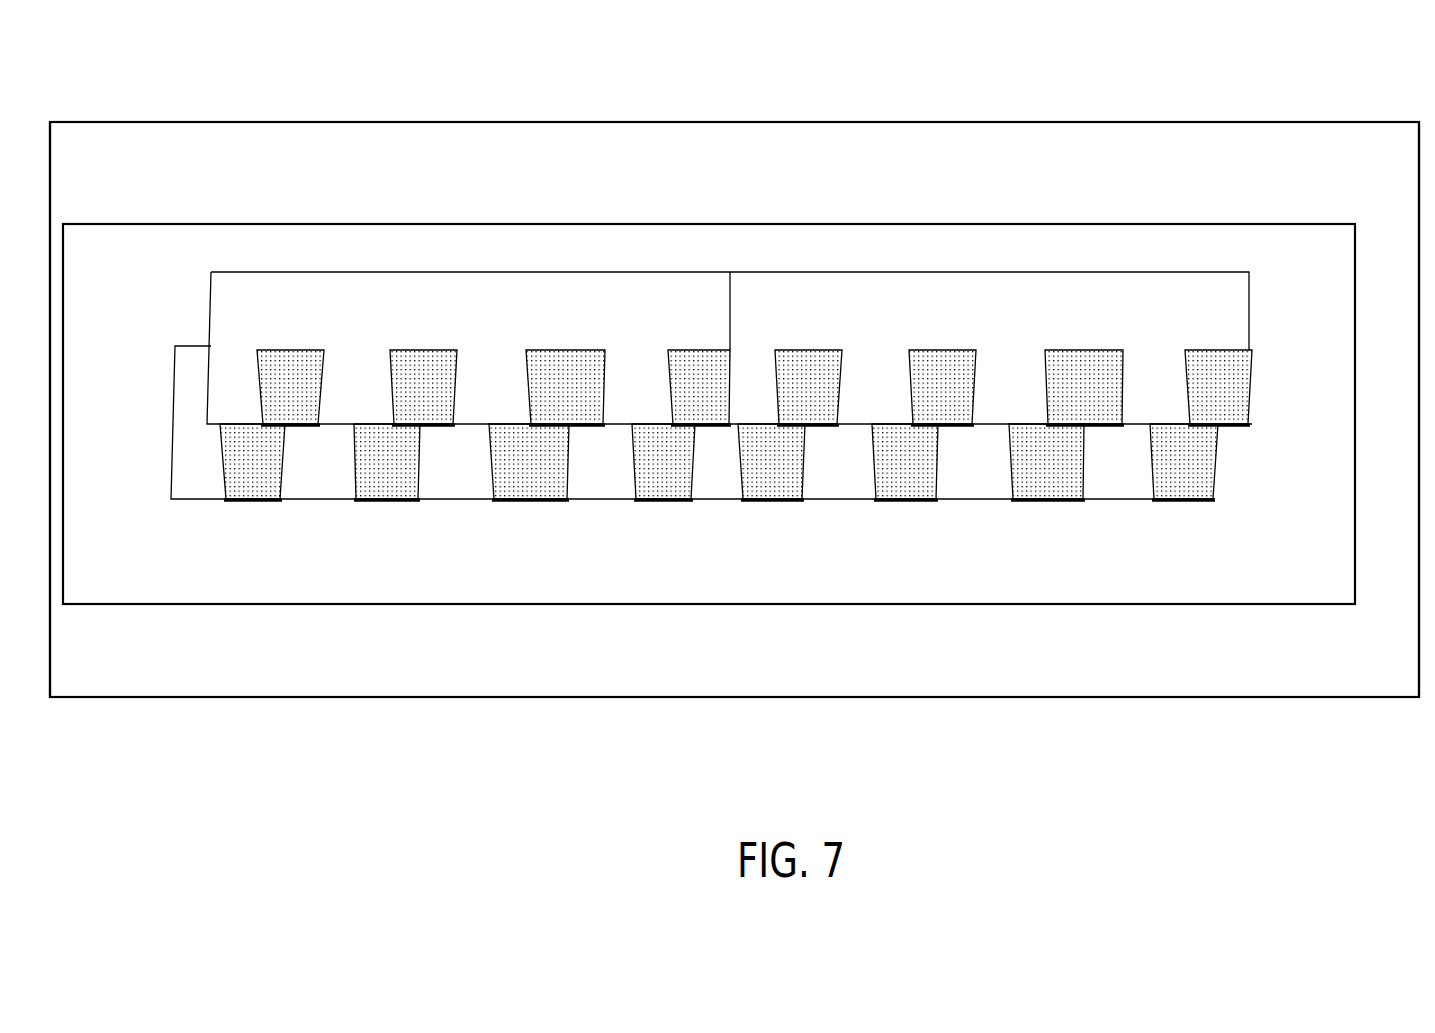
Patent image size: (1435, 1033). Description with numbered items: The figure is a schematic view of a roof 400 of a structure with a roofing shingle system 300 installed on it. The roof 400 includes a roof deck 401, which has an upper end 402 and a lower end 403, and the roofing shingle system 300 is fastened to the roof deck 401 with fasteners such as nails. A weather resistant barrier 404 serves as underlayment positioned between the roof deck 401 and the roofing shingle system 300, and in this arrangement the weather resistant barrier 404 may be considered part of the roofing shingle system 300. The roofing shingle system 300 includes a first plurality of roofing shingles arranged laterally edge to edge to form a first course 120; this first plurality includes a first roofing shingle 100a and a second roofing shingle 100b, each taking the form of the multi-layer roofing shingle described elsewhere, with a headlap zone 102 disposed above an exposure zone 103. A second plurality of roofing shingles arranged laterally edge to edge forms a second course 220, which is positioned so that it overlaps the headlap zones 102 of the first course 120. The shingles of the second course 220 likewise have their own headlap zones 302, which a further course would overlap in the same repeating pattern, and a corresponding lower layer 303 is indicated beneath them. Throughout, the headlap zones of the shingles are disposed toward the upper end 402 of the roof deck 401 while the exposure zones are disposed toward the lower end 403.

The roof 400 is at (886, 72).
The roof deck 401 is at (794, 167).
The upper end 402 is at (552, 122).
The lower end 403 is at (498, 697).
The weather resistant barrier 404 is at (380, 604).
The roofing shingle system 300 is at (1362, 224).
The second course 220 is at (734, 349).
The headlap zones 302 is at (167, 272).
The upper component bump layer 303 is at (1267, 349).
The first course 120 is at (642, 449).
The headlap zone 102 is at (157, 346).
The exposure zone 103 is at (167, 488).
The first roofing shingle 100a is at (443, 493).
The second roofing shingle 100b is at (910, 493).